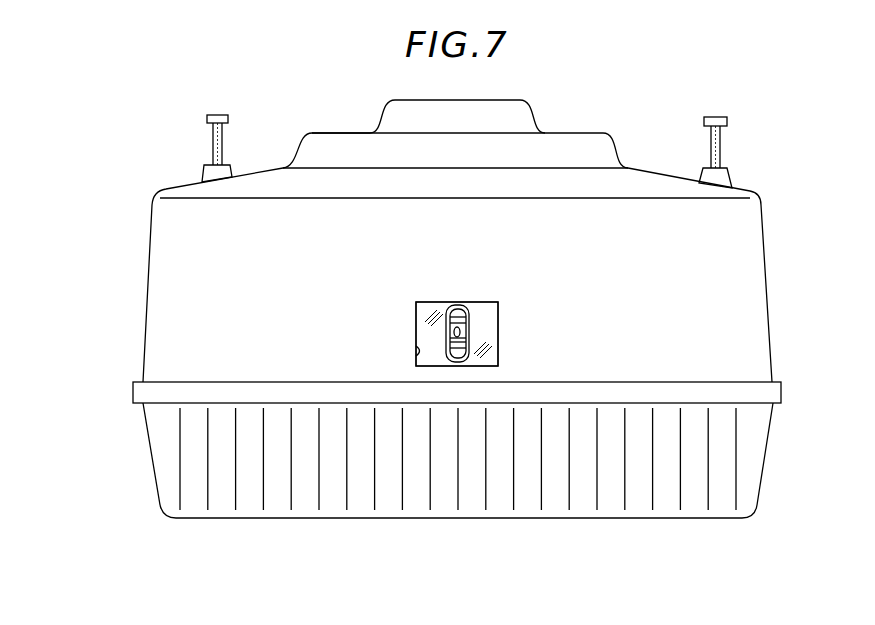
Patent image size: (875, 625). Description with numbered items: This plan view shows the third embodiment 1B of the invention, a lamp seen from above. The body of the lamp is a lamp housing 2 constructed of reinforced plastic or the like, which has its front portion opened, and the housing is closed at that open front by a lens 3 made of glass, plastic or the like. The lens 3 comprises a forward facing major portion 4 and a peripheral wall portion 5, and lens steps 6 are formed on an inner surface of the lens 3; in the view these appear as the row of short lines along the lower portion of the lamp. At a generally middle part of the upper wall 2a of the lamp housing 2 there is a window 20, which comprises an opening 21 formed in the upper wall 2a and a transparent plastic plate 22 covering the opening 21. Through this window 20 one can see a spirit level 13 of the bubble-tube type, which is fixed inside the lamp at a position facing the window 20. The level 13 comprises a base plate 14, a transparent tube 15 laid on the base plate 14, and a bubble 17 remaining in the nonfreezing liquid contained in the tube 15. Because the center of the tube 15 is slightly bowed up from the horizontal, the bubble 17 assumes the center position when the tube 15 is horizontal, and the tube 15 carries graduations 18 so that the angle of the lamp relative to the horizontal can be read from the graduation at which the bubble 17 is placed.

The third embodiment 1B is at (667, 109).
The lamp housing 2 is at (765, 251).
The upper wall 2a is at (208, 290).
The lens 3 is at (95, 485).
The major portion 4 is at (198, 518).
The peripheral wall portion 5 is at (193, 477).
The lens steps 6 is at (732, 448).
The spirit level 13 is at (468, 304).
The base plate 14 is at (478, 350).
The transparent tube 15 is at (466, 322).
The bubble 17 is at (462, 331).
The graduations 18 is at (453, 343).
The window 20 is at (492, 310).
The opening 21 is at (418, 352).
The transparent plastic plate 22 is at (428, 306).